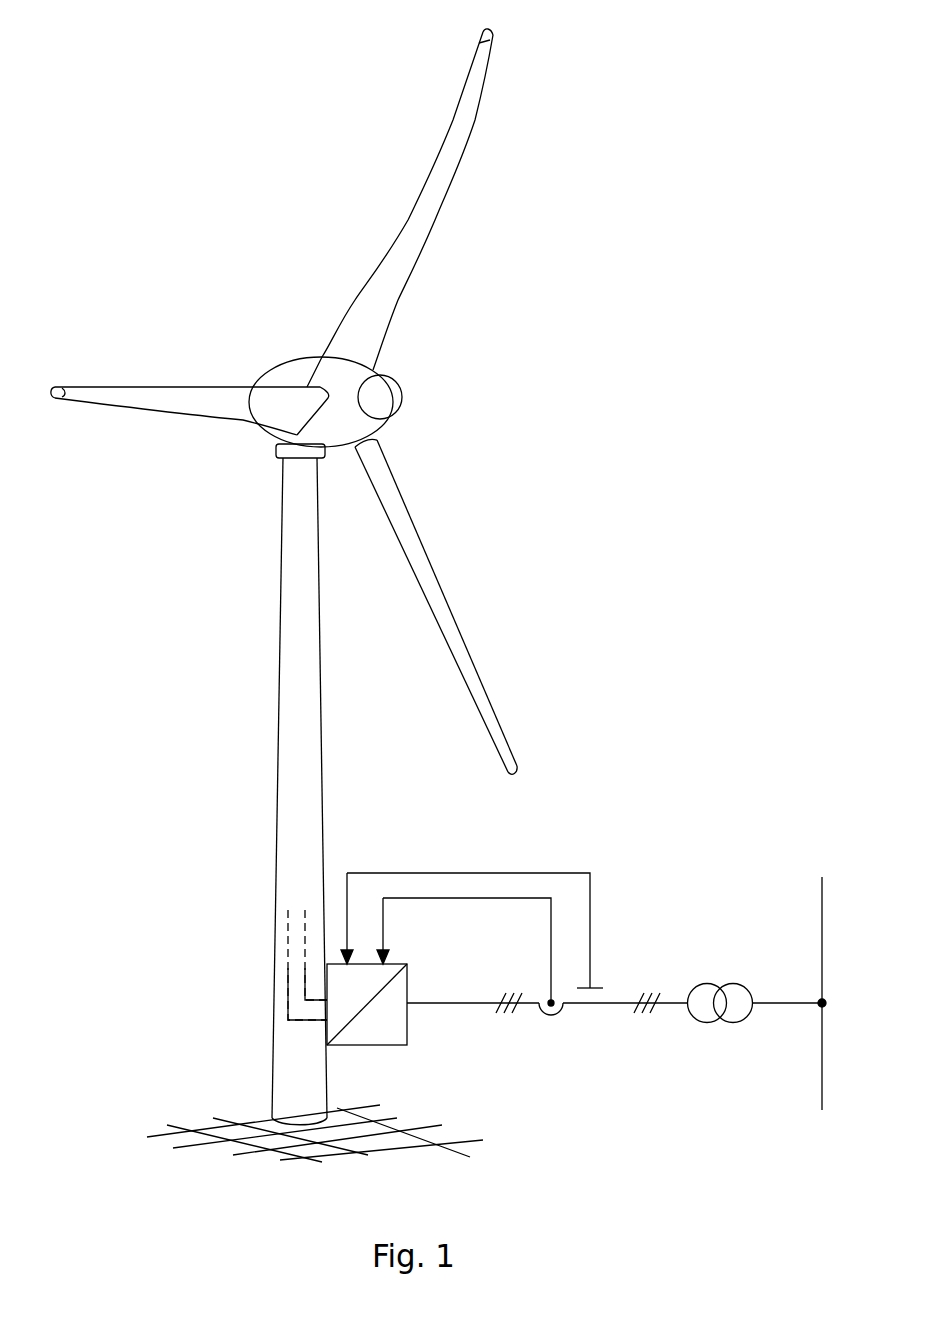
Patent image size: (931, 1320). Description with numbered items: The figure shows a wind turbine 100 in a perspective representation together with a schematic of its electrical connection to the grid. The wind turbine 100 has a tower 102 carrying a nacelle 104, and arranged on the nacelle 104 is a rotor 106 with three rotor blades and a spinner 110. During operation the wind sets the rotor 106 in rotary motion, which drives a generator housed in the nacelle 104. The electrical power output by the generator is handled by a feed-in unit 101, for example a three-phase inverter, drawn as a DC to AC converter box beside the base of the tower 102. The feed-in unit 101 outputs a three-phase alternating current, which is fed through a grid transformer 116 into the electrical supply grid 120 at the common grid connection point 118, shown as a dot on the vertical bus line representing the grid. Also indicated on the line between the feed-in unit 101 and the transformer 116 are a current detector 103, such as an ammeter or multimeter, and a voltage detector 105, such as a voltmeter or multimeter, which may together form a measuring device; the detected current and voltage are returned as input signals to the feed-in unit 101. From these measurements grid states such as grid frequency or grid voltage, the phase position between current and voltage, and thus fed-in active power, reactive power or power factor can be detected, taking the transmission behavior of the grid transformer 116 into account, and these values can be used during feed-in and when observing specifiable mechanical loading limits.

The wind turbine 100 is at (235, 524).
The feed-in unit 101 is at (395, 1040).
The tower 102 is at (305, 802).
The current detector 103 is at (553, 1030).
The nacelle 104 is at (293, 373).
The voltage detector 105 is at (612, 1018).
The rotor 106 is at (467, 318).
The spinner 110 is at (382, 400).
The grid transformer 116 is at (735, 978).
The grid connection point 118 is at (815, 1013).
The electrical supply grid 120 is at (820, 893).